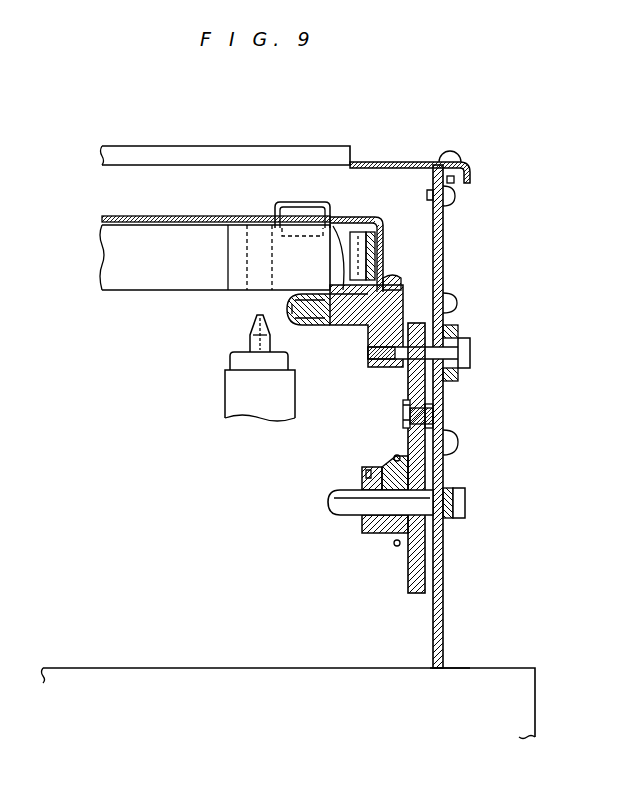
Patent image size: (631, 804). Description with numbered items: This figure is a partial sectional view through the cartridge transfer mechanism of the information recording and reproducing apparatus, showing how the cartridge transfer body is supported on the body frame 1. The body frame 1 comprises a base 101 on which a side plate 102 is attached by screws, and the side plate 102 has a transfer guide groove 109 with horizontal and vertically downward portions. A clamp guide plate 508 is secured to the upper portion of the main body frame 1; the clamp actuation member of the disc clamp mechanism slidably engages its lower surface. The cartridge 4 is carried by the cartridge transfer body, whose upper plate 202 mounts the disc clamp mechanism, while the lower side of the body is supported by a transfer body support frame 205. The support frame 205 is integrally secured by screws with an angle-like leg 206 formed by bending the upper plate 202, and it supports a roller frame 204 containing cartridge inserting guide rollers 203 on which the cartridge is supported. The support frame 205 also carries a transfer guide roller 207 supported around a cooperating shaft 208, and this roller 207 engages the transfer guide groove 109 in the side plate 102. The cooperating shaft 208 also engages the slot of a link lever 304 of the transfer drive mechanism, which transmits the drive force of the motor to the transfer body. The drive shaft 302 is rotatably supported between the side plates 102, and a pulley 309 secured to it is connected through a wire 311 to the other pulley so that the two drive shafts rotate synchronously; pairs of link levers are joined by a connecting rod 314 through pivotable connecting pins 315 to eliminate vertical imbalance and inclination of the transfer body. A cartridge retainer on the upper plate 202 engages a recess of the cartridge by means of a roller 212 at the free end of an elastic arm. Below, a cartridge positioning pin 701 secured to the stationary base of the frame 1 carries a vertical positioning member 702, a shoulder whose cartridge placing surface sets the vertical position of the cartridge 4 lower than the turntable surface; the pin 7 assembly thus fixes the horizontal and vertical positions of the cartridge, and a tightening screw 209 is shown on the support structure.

The body frame 1 is at (488, 666).
The base 101 is at (535, 690).
The side plate 102 is at (447, 412).
The cartridge 4 is at (120, 290).
The nozzle unit 7 is at (225, 408).
The cartridge positioning pin 701 is at (250, 336).
The vertical positioning member 702 is at (230, 364).
The transfer guide groove 109 is at (456, 320).
The upper plate 202 is at (219, 216).
The cartridge inserting guide roller 203 is at (311, 323).
The roller frame 204 is at (345, 265).
The transfer body support frame 205 is at (372, 345).
The angle-like leg 206 is at (386, 284).
The transfer guide roller 207 is at (462, 375).
The cooperating shaft 208 is at (470, 351).
The adjusting screw 209 is at (408, 378).
The roller 212 is at (300, 212).
The drive shaft 302 is at (350, 516).
The link lever 304 is at (438, 462).
The pulley 309 is at (388, 536).
The wire 311 is at (394, 455).
The connecting rod 314 is at (452, 432).
The connecting pin 315 is at (405, 420).
The clamp guide plate 508 is at (392, 163).